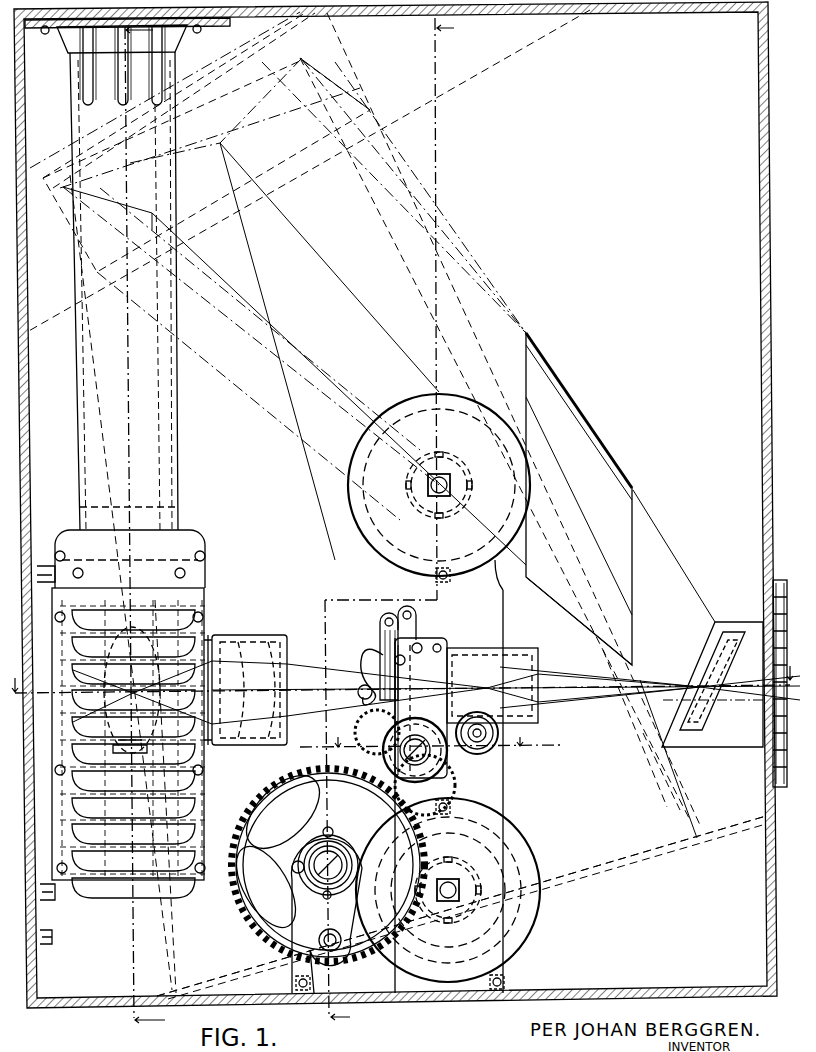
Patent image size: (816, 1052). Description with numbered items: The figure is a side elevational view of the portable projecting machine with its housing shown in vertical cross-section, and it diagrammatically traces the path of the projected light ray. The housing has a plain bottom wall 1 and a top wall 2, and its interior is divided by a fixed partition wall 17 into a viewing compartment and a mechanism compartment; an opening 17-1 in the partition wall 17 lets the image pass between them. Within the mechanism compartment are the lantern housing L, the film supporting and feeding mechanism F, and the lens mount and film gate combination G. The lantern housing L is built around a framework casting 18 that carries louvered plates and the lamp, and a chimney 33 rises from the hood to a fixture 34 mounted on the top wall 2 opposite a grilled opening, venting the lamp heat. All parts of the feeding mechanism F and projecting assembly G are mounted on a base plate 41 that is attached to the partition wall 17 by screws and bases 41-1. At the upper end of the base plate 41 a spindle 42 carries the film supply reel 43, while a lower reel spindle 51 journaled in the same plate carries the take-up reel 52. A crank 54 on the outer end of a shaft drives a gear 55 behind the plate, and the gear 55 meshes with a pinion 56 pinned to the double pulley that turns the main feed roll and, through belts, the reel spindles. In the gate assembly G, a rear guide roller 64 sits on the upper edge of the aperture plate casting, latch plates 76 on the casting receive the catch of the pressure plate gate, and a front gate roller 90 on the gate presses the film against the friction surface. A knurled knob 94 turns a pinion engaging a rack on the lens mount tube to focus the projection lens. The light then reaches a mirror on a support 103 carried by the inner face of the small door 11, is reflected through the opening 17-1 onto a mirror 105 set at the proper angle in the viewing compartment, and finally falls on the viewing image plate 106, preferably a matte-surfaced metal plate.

The bottom wall 1 is at (438, 1004).
The top wall 2 is at (650, 6).
The small door 11 is at (770, 784).
The partition wall 17 is at (632, 260).
The opening 17-1 is at (612, 470).
The framework casting 18 is at (48, 906).
The chimney 33 is at (176, 360).
The fixture 34 is at (68, 44).
The base plate 41 is at (490, 622).
The bases 41-1 is at (505, 980).
The spindle 42 is at (452, 487).
The film supply reel 43 is at (362, 453).
The lower reel spindle 51 is at (459, 888).
The take-up reel 52 is at (520, 846).
The crank 54 is at (344, 945).
The gear 55 is at (246, 910).
The pinion 56 is at (422, 762).
The guide roller 64 is at (412, 618).
The latch plates 76 is at (366, 650).
The front gate roller 90 is at (382, 612).
The knurled knob 94 is at (496, 758).
The support 103 is at (724, 750).
The mirror 105 is at (362, 94).
The viewing image plate 106 is at (622, 874).
The film supporting and feeding mechanism F is at (305, 816).
The lens mount and film gate combination G is at (477, 646).
The lantern housing L is at (236, 610).